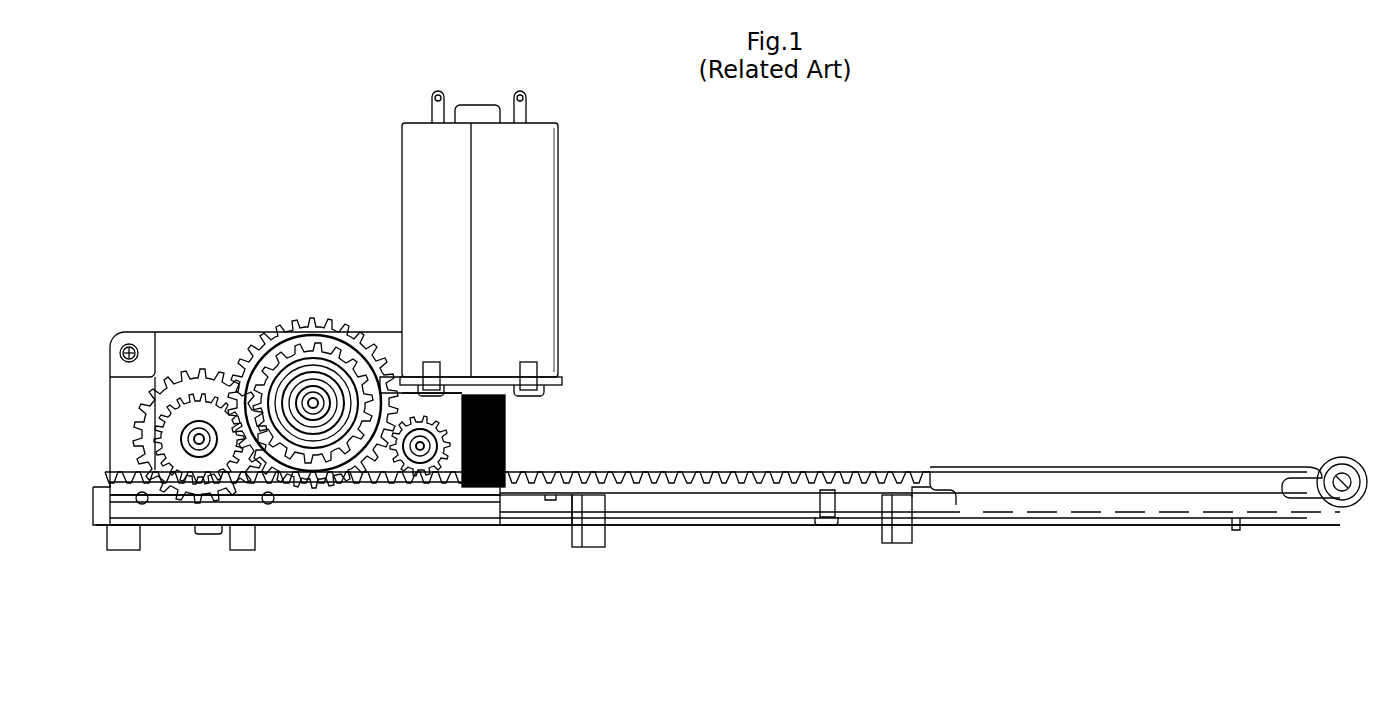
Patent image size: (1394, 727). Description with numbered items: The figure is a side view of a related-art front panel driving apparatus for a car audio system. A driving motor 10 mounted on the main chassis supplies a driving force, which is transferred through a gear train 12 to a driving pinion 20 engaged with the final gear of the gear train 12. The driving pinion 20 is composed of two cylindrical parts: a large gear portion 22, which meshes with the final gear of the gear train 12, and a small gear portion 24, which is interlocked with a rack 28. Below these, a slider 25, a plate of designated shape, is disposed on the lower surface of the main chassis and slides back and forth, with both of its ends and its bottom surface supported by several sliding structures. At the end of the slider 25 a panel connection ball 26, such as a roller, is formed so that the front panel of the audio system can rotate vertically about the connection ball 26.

The driving motor 10 is at (540, 196).
The gear train 12 is at (378, 292).
The driving pinion 20 is at (215, 256).
The large gear portion 22 is at (180, 366).
The small gear portion 24 is at (216, 366).
The slider 25 is at (1050, 512).
The panel connection ball 26 is at (1346, 490).
The rack 28 is at (679, 470).